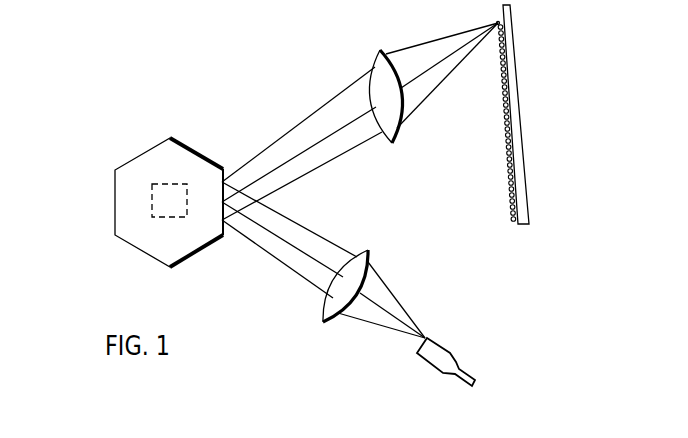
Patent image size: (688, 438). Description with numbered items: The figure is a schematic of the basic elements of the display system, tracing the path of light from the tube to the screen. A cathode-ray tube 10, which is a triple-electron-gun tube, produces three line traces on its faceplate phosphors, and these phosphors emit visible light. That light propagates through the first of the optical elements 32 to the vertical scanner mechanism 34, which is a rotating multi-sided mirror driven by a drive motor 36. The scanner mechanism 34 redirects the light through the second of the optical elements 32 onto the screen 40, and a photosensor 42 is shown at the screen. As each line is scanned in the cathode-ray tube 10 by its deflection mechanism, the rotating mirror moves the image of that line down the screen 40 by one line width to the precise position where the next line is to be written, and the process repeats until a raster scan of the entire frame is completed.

The cathode-ray tube 10 is at (450, 350).
The optical elements 32 is at (392, 144).
The vertical scanner mechanism 34 is at (150, 150).
The vertical scanner drive motor 36 is at (152, 205).
The screen 40 is at (523, 125).
The photosensor 42 is at (497, 19).